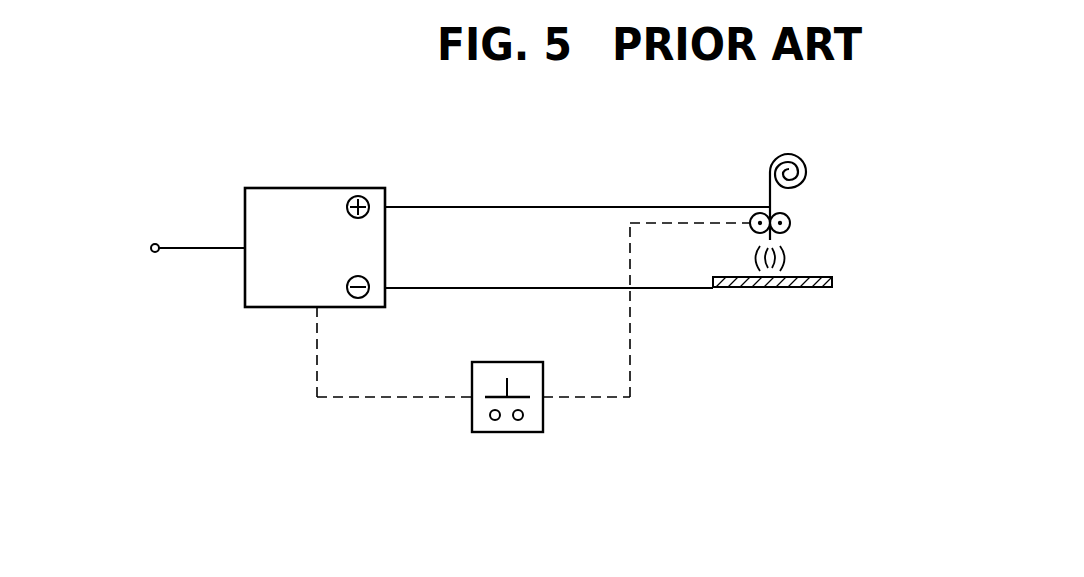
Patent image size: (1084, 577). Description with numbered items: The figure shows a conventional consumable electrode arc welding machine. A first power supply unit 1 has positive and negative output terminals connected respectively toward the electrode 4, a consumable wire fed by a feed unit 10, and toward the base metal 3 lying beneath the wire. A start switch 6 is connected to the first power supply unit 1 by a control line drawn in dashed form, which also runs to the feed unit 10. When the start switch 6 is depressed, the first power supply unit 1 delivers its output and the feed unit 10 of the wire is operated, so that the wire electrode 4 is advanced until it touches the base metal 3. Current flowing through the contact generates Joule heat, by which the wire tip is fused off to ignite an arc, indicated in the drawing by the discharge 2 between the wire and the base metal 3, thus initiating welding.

The first power supply unit 1 is at (266, 188).
The corona discharge 2 is at (792, 263).
The base metal 3 is at (805, 288).
The electrode 4 is at (806, 172).
The start switch 6 is at (545, 415).
The feed unit 10 is at (790, 222).